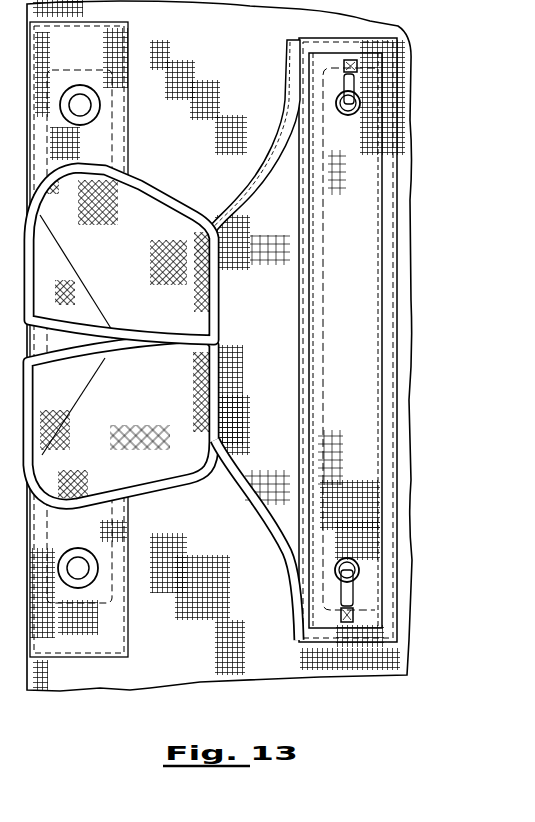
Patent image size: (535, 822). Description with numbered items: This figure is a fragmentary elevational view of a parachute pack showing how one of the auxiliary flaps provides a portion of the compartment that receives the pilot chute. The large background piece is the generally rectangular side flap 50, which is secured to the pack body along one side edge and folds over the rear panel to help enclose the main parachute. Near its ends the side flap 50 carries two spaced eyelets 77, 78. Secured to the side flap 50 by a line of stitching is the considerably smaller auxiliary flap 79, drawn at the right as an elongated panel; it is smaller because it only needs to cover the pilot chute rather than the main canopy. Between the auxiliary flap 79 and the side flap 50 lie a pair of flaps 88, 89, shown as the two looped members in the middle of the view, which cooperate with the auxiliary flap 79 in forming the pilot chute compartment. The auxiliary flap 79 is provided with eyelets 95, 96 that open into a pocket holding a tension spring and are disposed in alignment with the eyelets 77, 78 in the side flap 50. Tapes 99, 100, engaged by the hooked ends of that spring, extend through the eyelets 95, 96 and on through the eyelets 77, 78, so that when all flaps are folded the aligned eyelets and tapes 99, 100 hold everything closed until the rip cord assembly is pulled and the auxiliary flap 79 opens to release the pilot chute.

The side flap 50 is at (124, 690).
The eyelet 77 is at (82, 93).
The eyelet 78 is at (82, 582).
The auxiliary flap 79 is at (407, 129).
The flap 88 is at (159, 197).
The flap 89 is at (165, 455).
The eyelet 95 is at (358, 100).
The eyelet 96 is at (356, 569).
The tape 99 is at (352, 68).
The tape 100 is at (355, 600).